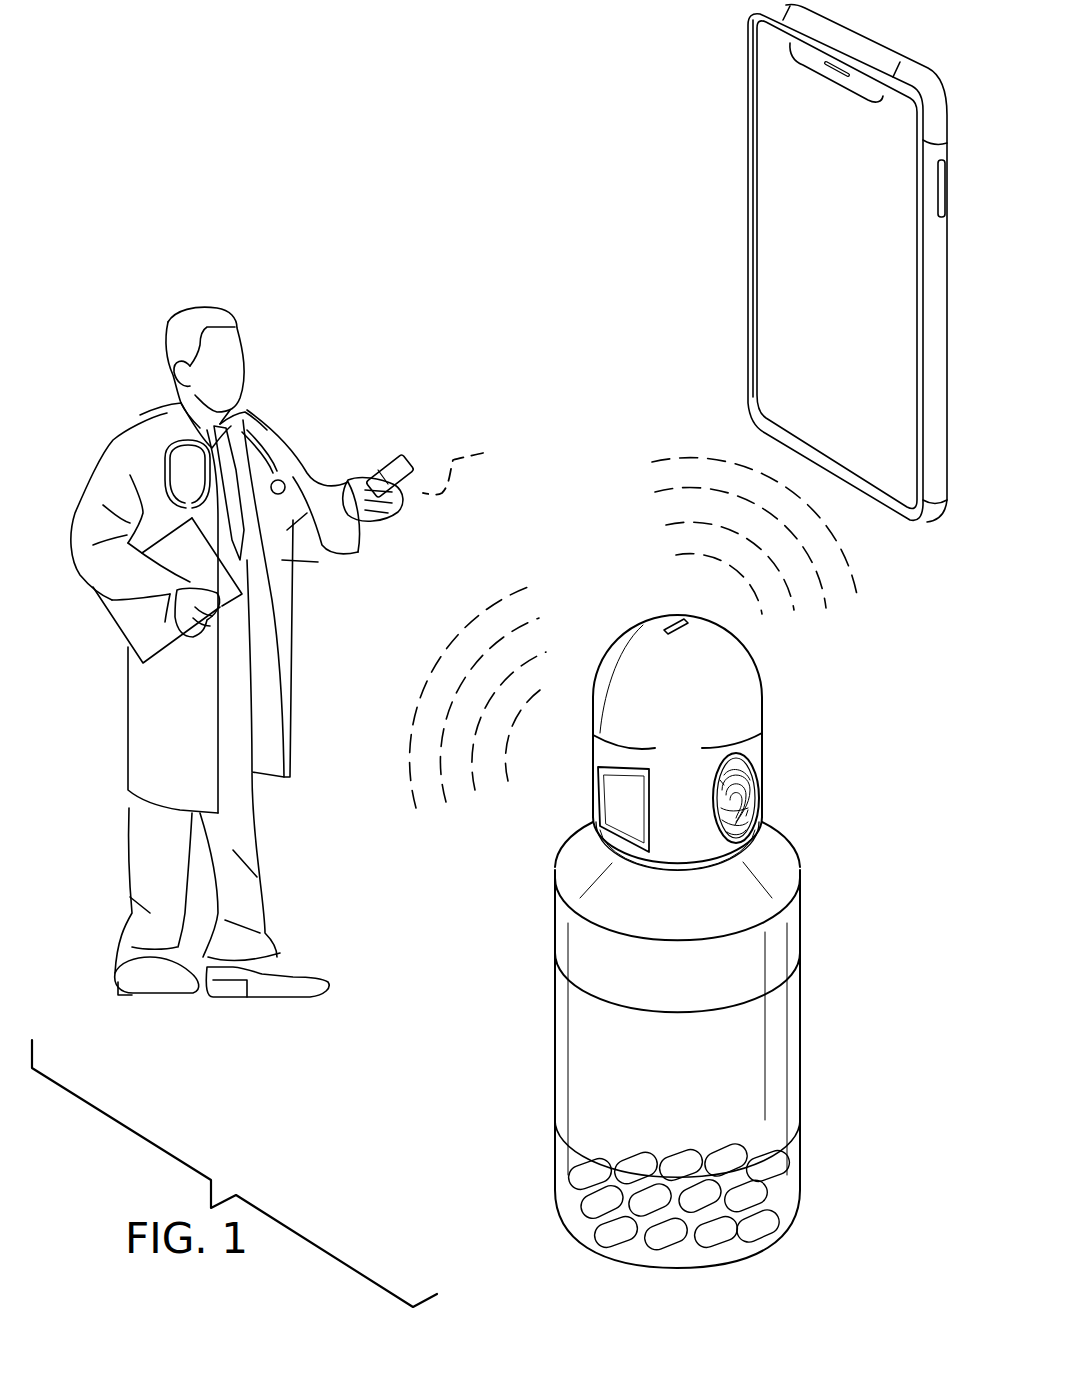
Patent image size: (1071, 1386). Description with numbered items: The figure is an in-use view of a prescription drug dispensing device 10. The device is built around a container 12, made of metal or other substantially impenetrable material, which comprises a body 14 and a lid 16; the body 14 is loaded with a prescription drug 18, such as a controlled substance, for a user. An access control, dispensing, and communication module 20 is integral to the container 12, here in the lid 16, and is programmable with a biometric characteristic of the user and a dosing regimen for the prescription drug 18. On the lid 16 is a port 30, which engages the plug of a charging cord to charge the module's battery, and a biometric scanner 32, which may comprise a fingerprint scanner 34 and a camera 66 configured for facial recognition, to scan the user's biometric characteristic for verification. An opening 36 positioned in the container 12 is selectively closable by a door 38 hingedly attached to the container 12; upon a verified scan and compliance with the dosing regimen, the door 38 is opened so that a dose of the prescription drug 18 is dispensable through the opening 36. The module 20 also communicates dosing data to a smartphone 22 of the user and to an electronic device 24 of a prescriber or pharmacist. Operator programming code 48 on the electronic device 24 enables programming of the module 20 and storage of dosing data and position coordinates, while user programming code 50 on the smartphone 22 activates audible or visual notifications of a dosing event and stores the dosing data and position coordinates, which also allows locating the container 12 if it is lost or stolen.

The prescription drug dispensing device 10 is at (598, 480).
The container 12 is at (750, 1045).
The body 14 is at (777, 1013).
The lid 16 is at (665, 726).
The prescription drug 18 is at (733, 1199).
The access control, dispensing, and communication module 20 is at (648, 722).
The smartphone 22 is at (745, 210).
The electronic device 24 is at (410, 463).
The port 30 is at (663, 622).
The biometric scanner 32 is at (819, 799).
The fingerprint scanner 34 is at (760, 797).
The opening 36 is at (637, 818).
The door 38 is at (526, 849).
The operator programming code 48 is at (476, 465).
The user programming code 50 is at (797, 275).
The camera 66 is at (757, 817).